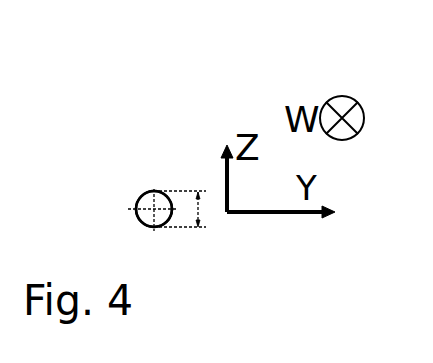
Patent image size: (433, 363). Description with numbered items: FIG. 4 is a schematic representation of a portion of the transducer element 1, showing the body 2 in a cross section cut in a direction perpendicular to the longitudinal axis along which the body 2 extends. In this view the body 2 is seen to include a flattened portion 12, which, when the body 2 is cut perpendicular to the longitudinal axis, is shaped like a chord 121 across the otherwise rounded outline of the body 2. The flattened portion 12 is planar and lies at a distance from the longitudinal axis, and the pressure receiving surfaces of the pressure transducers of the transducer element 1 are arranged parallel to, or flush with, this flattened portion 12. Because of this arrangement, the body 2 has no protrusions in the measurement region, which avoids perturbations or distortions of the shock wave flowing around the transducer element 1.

The transducer element 1 is at (130, 118).
The body 2 is at (137, 173).
The flattened portion 12 is at (155, 191).
The chord 121 is at (154, 209).